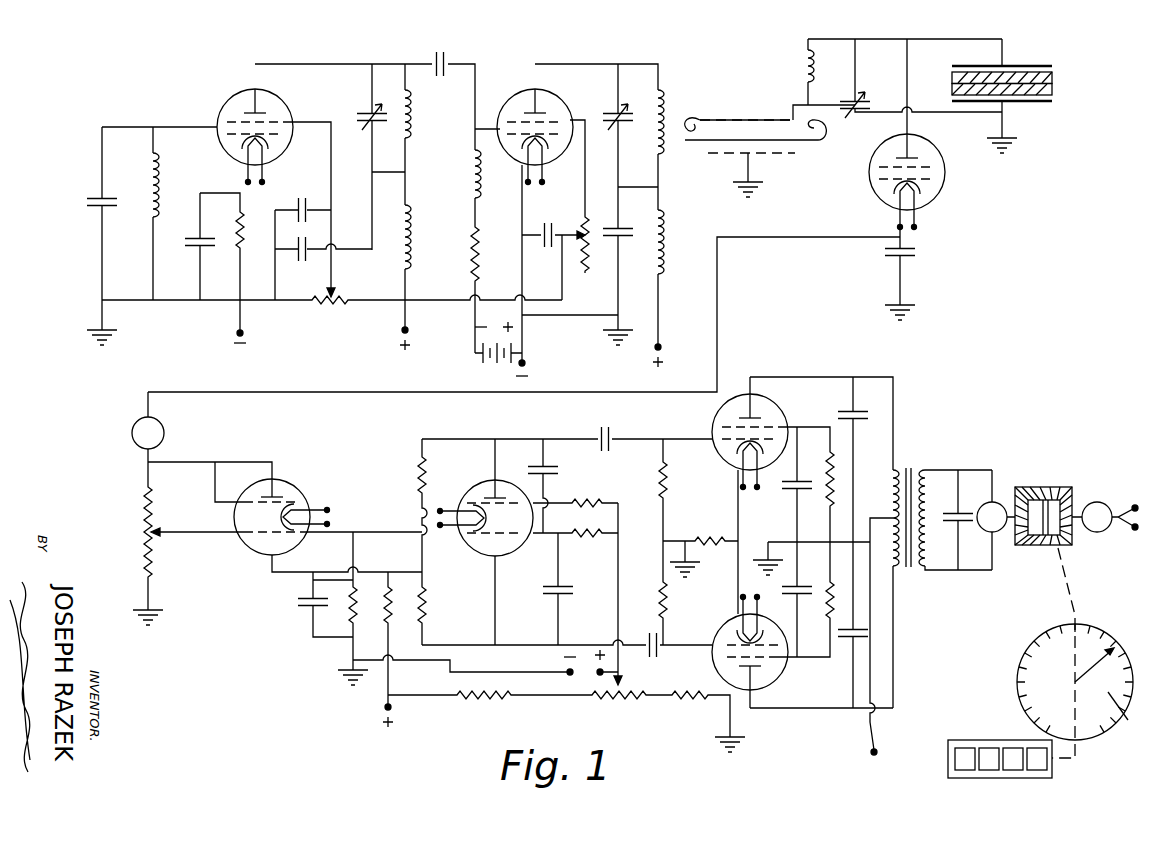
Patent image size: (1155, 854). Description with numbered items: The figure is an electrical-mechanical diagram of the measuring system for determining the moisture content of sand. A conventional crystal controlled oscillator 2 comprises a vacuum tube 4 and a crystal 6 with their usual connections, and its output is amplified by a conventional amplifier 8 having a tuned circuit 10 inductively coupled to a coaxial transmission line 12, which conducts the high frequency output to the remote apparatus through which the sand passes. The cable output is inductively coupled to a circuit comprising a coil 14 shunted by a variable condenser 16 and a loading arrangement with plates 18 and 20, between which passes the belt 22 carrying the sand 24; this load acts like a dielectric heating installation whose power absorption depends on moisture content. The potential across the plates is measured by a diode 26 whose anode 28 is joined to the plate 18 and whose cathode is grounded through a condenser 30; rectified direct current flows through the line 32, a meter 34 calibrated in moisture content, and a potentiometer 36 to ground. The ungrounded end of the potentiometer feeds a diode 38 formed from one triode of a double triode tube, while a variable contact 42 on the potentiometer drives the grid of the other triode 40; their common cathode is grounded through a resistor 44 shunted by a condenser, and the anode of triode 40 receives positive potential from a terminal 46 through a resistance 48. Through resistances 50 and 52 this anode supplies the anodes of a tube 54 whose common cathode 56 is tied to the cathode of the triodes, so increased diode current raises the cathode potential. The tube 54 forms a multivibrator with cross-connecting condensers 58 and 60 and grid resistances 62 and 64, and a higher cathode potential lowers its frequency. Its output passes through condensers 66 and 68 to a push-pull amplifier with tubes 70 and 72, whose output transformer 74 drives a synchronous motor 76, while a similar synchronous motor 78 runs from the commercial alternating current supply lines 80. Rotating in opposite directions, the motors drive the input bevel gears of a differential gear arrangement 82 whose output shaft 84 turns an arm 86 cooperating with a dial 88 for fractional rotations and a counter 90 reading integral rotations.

The crystal controlled oscillator 2 is at (363, 62).
The vacuum tube 4 is at (218, 115).
The crystal 6 is at (96, 195).
The amplifier 8 is at (521, 96).
The tuned circuit 10 is at (656, 62).
The coaxial transmission line 12 is at (762, 120).
The coil 14 is at (798, 78).
The variable condenser 16 is at (852, 95).
The plate 18 is at (1028, 96).
The plate 20 is at (1042, 106).
The belt 22 is at (1053, 92).
The sand 24 is at (1053, 78).
The diode 26 is at (944, 188).
The anode 28 is at (880, 160).
The condenser 30 is at (916, 256).
The line 32 is at (719, 298).
The meter 34 is at (131, 433).
The potentiometer 36 is at (140, 510).
The diode 38 is at (291, 494).
The triode 40 is at (255, 542).
The variable contact 42 is at (162, 540).
The resistor 44 is at (346, 618).
The terminal 46 is at (384, 708).
The resistance 48 is at (385, 615).
The resistance 50 is at (418, 484).
The resistance 52 is at (419, 615).
The tube 54 is at (486, 542).
The common cathode 56 is at (485, 548).
The condenser 58 is at (548, 468).
The condenser 60 is at (592, 598).
The resistance 62 is at (585, 497).
The resistance 64 is at (598, 540).
The condenser 66 is at (600, 434).
The condenser 68 is at (650, 642).
The tube 70 is at (714, 407).
The tube 72 is at (714, 680).
The output transformer 74 is at (910, 466).
The synchronous motor 76 is at (995, 502).
The synchronous motor 78 is at (1099, 502).
The alternating current supply lines 80 is at (1120, 524).
The differential gear arrangement 82 is at (1047, 485).
The output shaft 84 is at (1066, 588).
The arm 86 is at (1128, 720).
The dial 88 is at (1028, 650).
The counter 90 is at (948, 775).